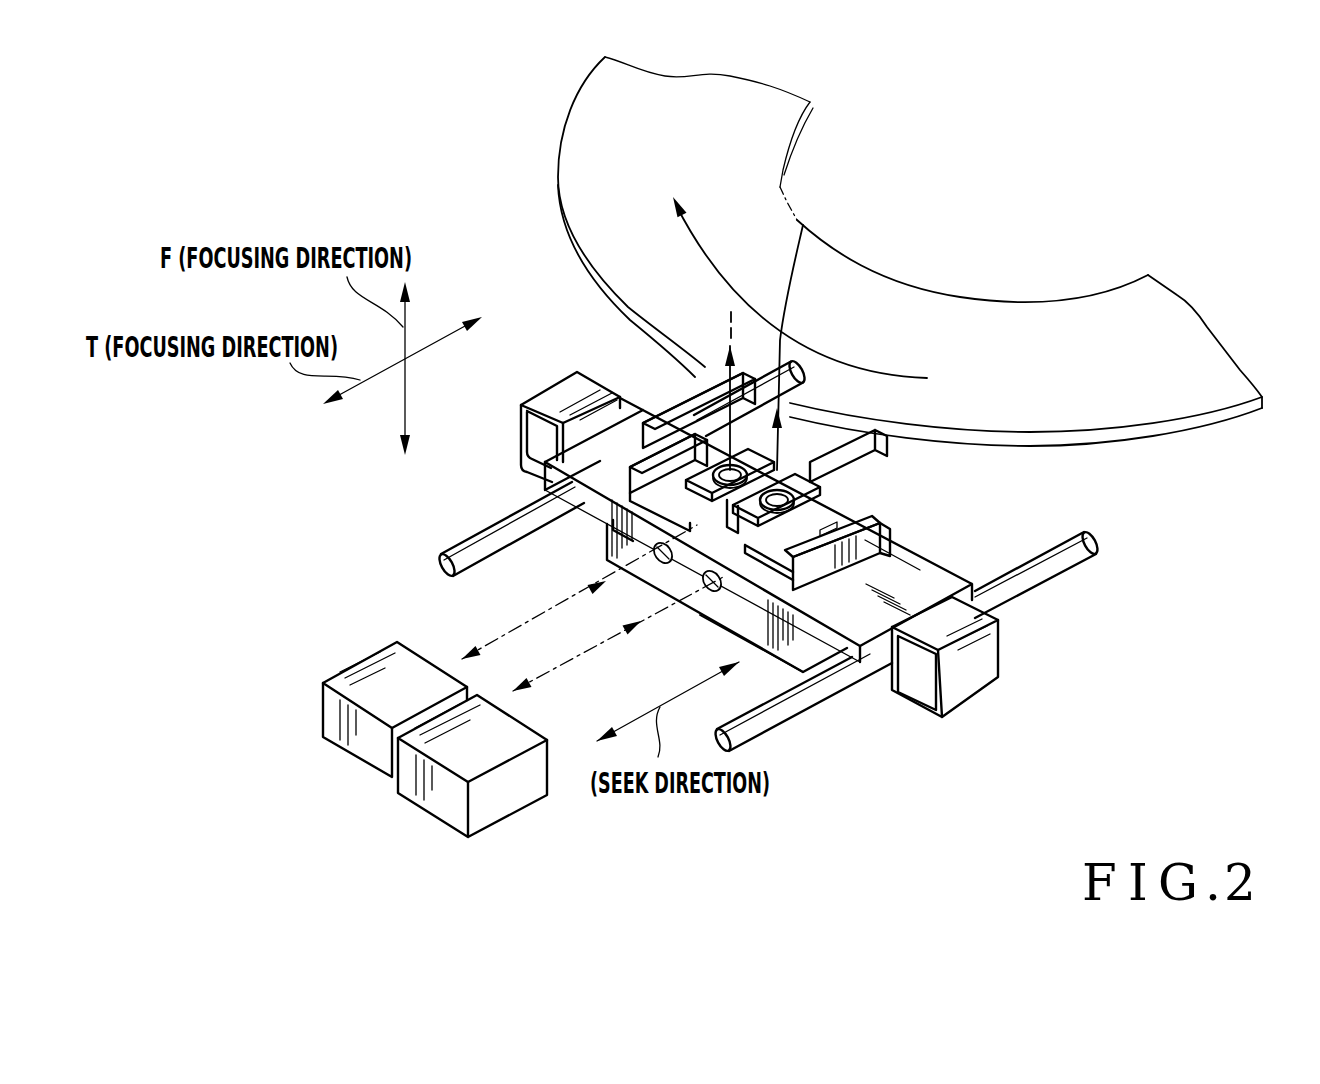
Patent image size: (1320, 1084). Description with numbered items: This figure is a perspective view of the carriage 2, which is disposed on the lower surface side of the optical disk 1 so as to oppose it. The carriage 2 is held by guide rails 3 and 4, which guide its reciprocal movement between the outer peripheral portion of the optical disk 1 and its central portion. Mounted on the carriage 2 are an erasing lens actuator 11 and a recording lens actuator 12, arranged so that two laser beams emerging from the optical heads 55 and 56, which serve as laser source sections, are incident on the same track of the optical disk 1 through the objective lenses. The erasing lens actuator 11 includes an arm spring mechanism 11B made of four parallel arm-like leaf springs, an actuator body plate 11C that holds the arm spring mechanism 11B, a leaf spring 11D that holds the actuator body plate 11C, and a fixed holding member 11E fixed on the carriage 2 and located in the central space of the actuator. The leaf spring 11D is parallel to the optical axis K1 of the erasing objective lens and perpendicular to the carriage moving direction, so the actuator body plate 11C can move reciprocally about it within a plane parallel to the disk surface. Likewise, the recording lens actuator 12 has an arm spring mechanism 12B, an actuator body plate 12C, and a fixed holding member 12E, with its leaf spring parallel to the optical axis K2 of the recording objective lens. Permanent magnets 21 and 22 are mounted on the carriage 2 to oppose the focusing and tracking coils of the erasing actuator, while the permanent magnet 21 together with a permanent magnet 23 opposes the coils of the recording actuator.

The optical disk 1 is at (1082, 313).
The carriage 2 is at (990, 570).
The guide rail 3 is at (466, 540).
The guide rail 4 is at (783, 720).
The erasing lens actuator 11 is at (865, 492).
The arm spring mechanism 11B is at (752, 565).
The actuator body plate 11C is at (893, 545).
The leaf spring 11D is at (825, 560).
The fixed holding member 11E is at (888, 520).
The recording lens actuator 12 is at (795, 410).
The arm spring mechanism 12B is at (613, 527).
The actuator body plate 12C is at (630, 462).
The fixed holding member 12E is at (670, 440).
The permanent magnet 21 is at (793, 468).
The permanent magnet 22 is at (862, 470).
The permanent magnet 23 is at (714, 418).
The optical head 55 is at (525, 793).
The optical head 56 is at (372, 660).
The optical axis K1 is at (803, 224).
The optical axis K2 is at (732, 310).